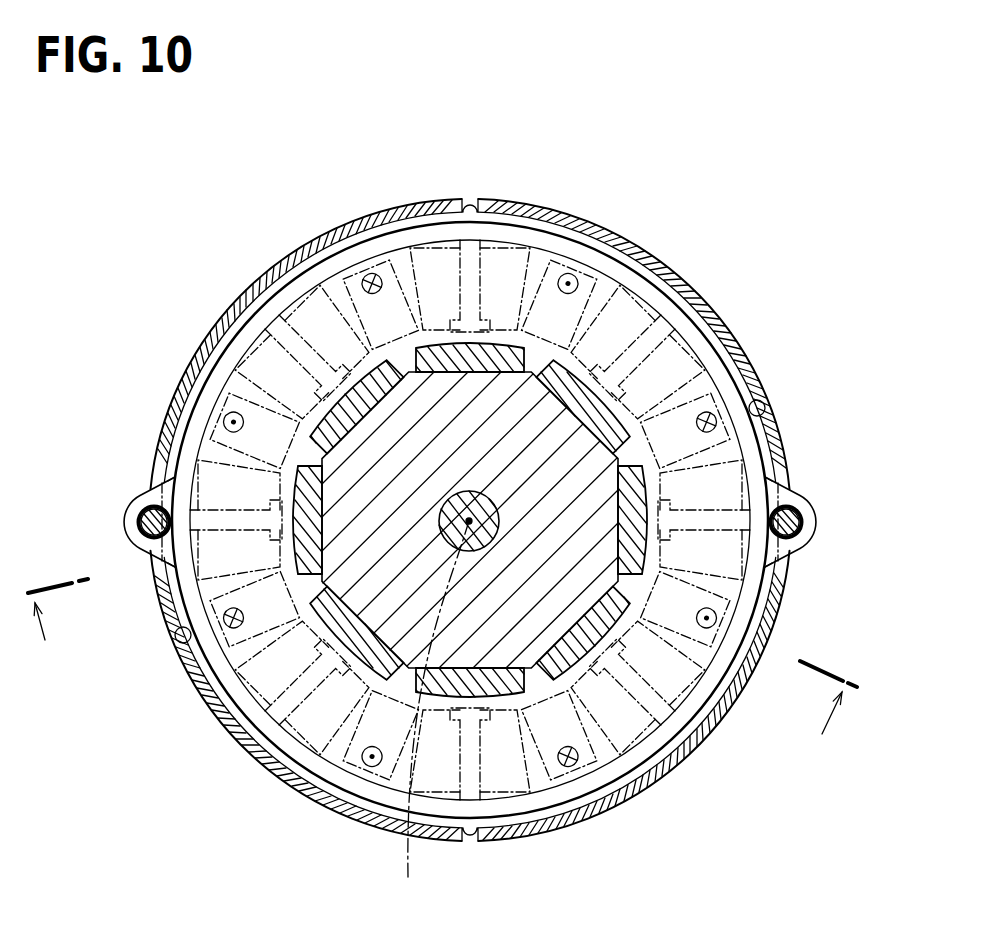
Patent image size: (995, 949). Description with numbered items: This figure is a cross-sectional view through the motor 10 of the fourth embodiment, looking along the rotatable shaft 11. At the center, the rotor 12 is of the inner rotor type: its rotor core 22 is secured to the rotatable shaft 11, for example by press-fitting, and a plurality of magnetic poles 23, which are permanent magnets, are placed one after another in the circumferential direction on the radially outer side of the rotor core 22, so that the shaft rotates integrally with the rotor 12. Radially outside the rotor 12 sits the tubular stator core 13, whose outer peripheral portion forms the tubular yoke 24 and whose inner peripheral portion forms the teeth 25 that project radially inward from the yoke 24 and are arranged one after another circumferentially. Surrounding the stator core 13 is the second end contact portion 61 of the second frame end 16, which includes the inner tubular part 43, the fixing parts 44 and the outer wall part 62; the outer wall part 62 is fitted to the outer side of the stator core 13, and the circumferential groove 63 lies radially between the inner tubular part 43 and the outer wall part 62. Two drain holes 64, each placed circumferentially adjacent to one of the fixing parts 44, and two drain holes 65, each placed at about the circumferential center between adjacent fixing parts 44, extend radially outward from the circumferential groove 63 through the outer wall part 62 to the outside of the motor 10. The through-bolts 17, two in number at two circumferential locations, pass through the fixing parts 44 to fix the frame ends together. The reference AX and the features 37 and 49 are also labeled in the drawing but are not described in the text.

The motor 10 is at (229, 249).
The rotatable shaft 11 is at (480, 506).
The rotor 12 is at (580, 158).
The stator core 13 is at (320, 178).
The second frame end 16 is at (227, 309).
The through-bolts 17 is at (140, 522).
The rotor core 22 is at (465, 375).
The magnetic poles 23 is at (510, 353).
The yoke 24 is at (278, 287).
The teeth 25 is at (312, 287).
The outer peripheral wall 37 is at (228, 718).
The inner tubular part 43 is at (193, 437).
The fixing parts 44 is at (138, 503).
The bolt hole 49 is at (140, 536).
The second end contact portion 61 is at (168, 407).
The outer wall part 62 is at (187, 375).
The circumferential groove 63 is at (176, 630).
The drain holes 64 is at (163, 477).
The drain holes 65 is at (470, 198).
The axis AX is at (433, 713).